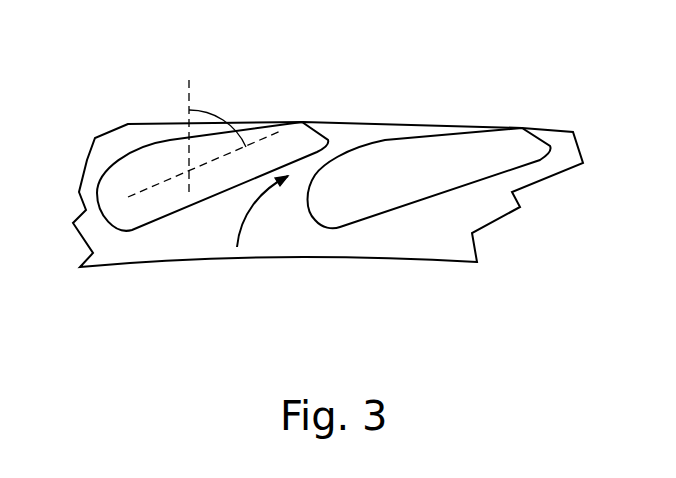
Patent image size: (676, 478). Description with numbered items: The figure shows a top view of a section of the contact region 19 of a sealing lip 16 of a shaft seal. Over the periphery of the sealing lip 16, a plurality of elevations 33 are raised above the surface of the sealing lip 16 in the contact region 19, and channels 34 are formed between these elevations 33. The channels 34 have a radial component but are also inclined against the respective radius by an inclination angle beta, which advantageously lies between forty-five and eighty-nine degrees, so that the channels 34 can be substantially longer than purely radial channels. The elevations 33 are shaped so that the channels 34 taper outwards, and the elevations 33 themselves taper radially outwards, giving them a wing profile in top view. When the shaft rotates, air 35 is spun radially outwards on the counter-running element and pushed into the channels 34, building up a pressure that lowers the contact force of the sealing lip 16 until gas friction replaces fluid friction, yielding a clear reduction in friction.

The sealing lip 16 is at (328, 237).
The contact region 19 is at (400, 233).
The elevations 33 is at (425, 160).
The channels 34 is at (315, 157).
The air 35 is at (240, 223).